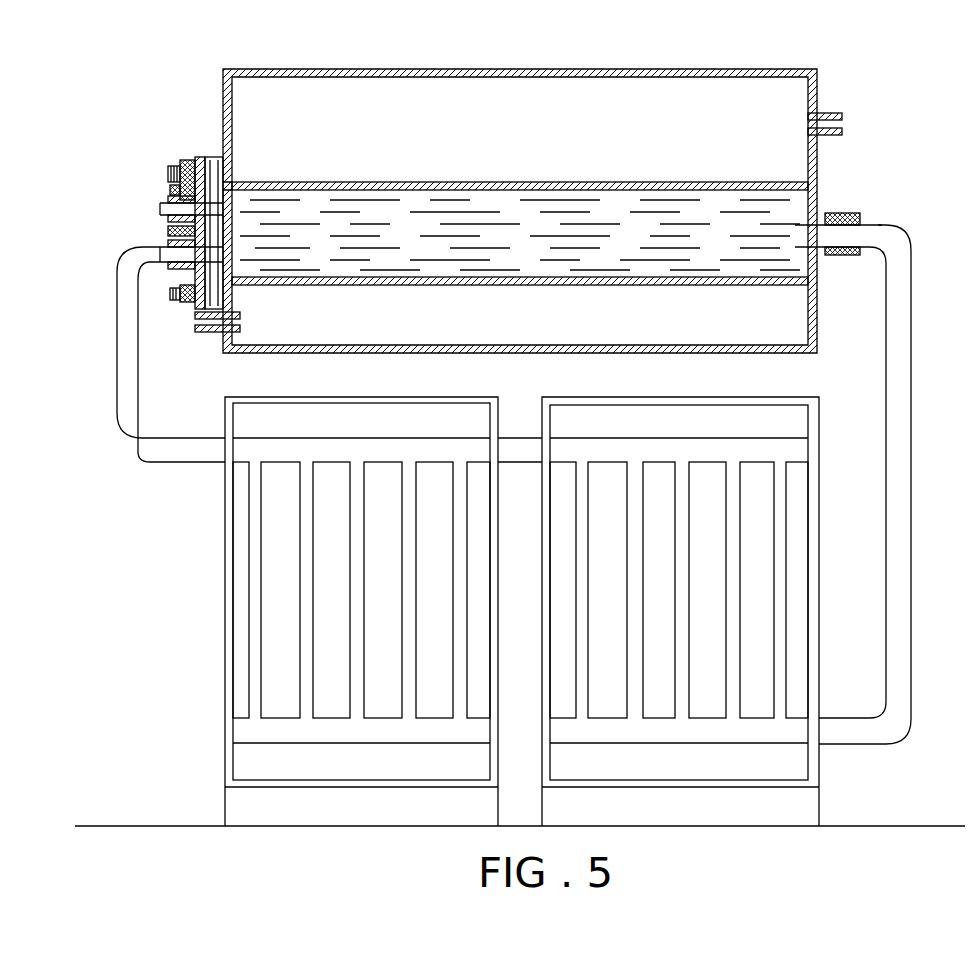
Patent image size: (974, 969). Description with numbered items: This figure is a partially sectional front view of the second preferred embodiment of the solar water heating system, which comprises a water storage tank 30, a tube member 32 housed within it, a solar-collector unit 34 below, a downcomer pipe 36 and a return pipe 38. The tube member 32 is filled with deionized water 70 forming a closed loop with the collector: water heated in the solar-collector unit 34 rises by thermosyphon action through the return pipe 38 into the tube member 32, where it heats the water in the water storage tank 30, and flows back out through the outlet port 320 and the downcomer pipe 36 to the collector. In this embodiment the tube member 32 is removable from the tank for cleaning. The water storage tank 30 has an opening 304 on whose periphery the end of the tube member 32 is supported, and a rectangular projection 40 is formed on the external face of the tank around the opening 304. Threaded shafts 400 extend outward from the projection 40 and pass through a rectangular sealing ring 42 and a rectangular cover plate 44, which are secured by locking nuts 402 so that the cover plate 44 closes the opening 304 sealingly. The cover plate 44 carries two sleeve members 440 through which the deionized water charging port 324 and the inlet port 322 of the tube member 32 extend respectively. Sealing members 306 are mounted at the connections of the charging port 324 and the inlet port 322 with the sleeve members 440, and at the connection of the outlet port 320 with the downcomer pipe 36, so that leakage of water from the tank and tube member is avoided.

The water storage tank 30 is at (556, 76).
The tube member 32 is at (612, 185).
The deionized water 70 is at (452, 196).
The opening 304 is at (238, 183).
The rectangular projection 40 is at (218, 157).
The rectangular sealing ring 42 is at (200, 157).
The threaded shafts 400 is at (173, 168).
The locking nuts 402 is at (178, 184).
The deionized water charging port 324 is at (160, 205).
The sleeve members 440 is at (163, 229).
The inlet port 322 is at (158, 250).
The sealing members 306 is at (173, 283).
The rectangular cover plate 44 is at (195, 318).
The outlet port 320 is at (882, 228).
The downcomer pipe 36 is at (912, 297).
The return pipe 38 is at (117, 409).
The solar-collector unit 34 is at (542, 493).